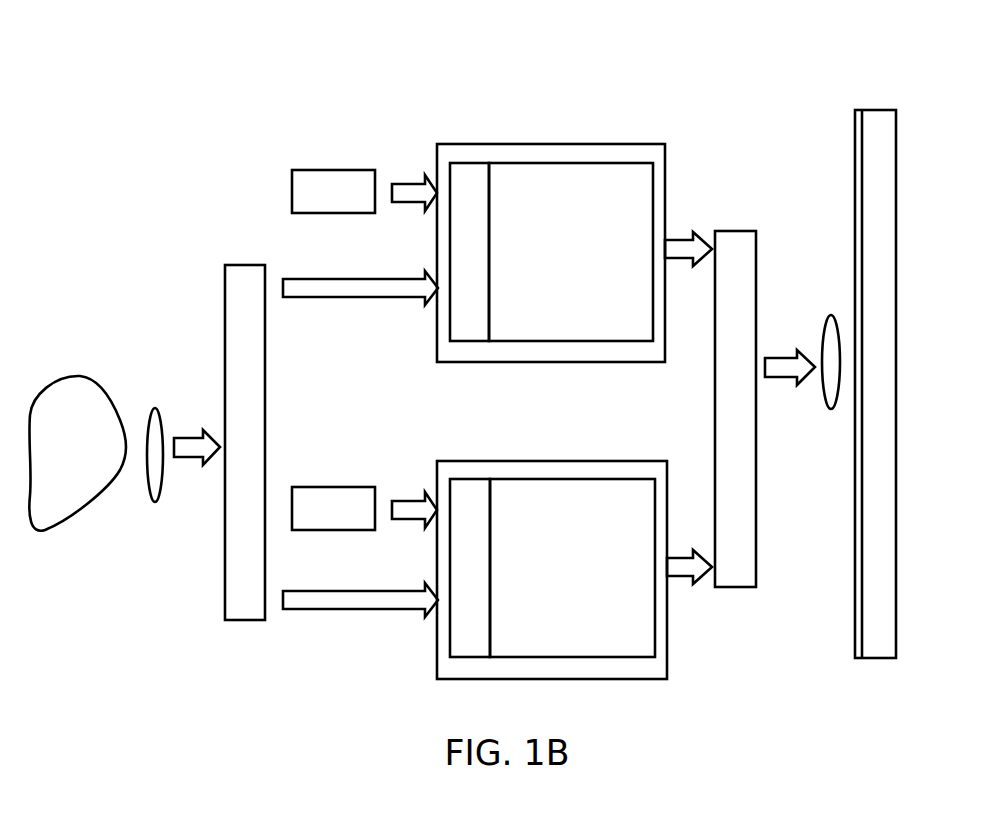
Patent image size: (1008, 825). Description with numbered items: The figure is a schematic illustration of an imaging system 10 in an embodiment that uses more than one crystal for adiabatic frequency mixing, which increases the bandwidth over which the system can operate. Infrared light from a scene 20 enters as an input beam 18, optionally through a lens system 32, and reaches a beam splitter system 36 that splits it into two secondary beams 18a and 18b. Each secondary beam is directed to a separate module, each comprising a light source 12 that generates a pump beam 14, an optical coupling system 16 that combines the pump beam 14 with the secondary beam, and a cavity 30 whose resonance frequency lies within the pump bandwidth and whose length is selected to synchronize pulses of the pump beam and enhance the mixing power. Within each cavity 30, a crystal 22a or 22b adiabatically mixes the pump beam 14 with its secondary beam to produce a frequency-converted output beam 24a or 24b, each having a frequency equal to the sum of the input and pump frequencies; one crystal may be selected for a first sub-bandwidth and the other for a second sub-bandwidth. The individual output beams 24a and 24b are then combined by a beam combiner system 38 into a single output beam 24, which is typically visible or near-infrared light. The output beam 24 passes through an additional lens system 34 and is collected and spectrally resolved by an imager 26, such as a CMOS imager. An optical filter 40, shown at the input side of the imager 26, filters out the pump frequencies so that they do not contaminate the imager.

The imaging system 10 is at (172, 90).
The light source 12 is at (322, 180).
The pump beam 14 is at (402, 192).
The optical coupling system 16 is at (466, 170).
The input beam 18 is at (192, 452).
The secondary beam 18a is at (306, 297).
The secondary beam 18b is at (306, 609).
The scene 20 is at (74, 455).
The crystal 22a is at (582, 264).
The crystal 22b is at (582, 582).
The output beam 24 is at (784, 360).
The output beam 24a is at (681, 244).
The output beam 24b is at (685, 557).
The imager 26 is at (873, 125).
The cavity 30 is at (553, 143).
The lens system 32 is at (154, 420).
The additional lens system 34 is at (828, 410).
The beam splitter system 36 is at (240, 622).
The beam combiner system 38 is at (738, 589).
The optical filter 40 is at (852, 637).